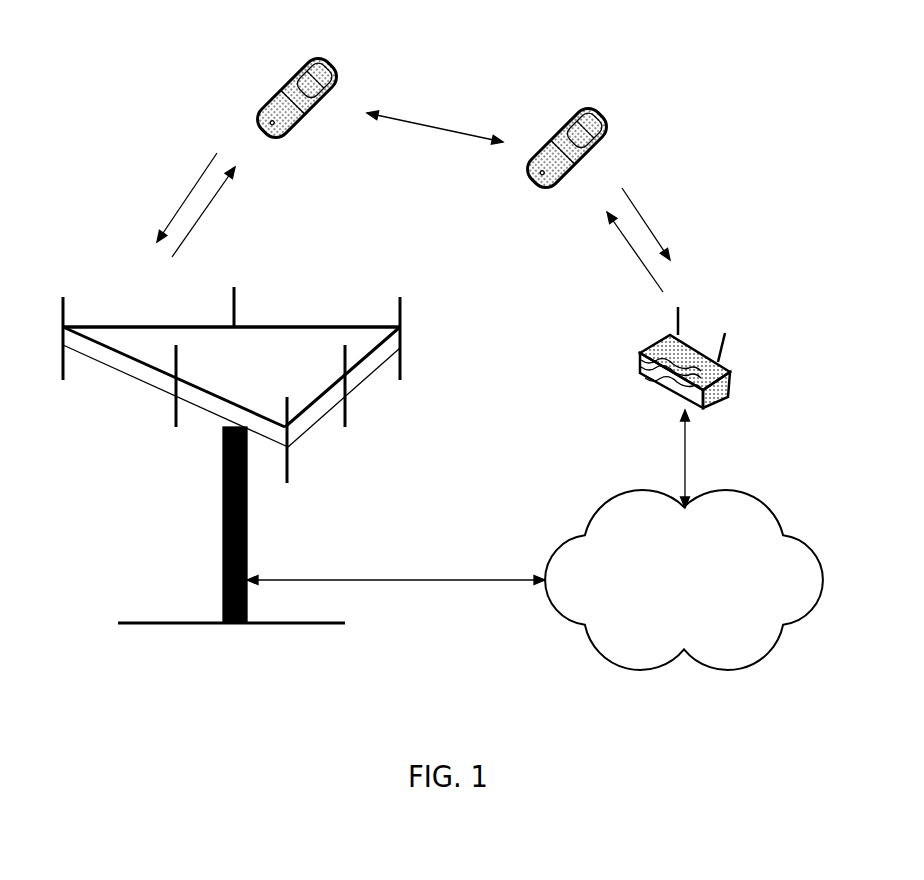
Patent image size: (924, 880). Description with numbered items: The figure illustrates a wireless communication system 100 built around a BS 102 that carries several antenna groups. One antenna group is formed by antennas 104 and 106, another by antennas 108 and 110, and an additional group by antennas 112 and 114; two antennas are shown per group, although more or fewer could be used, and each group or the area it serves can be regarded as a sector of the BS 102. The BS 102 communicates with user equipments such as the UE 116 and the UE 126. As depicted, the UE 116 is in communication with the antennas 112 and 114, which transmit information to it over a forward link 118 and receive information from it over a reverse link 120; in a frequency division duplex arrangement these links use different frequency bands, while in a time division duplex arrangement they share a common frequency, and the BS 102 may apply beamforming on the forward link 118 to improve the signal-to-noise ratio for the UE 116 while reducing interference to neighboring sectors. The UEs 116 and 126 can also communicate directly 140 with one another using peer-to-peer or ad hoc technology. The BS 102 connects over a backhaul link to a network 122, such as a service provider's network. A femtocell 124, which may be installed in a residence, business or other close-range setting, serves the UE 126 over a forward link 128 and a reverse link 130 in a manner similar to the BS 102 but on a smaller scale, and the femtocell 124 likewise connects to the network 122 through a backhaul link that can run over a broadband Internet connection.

The wireless communication system 100 is at (751, 79).
The BS 102 is at (248, 624).
The antenna 104 is at (401, 297).
The antenna 106 is at (349, 417).
The antenna 108 is at (291, 470).
The antenna 110 is at (175, 427).
The antenna 112 is at (64, 297).
The antenna 114 is at (235, 296).
The UE 116 is at (308, 58).
The forward link 118 is at (206, 207).
The reverse link 120 is at (184, 203).
The network 122 is at (823, 577).
The femtocell 124 is at (655, 343).
The UE 126 is at (573, 110).
The forward link 128 is at (628, 245).
The reverse link 130 is at (645, 220).
The direct communication 140 is at (438, 127).